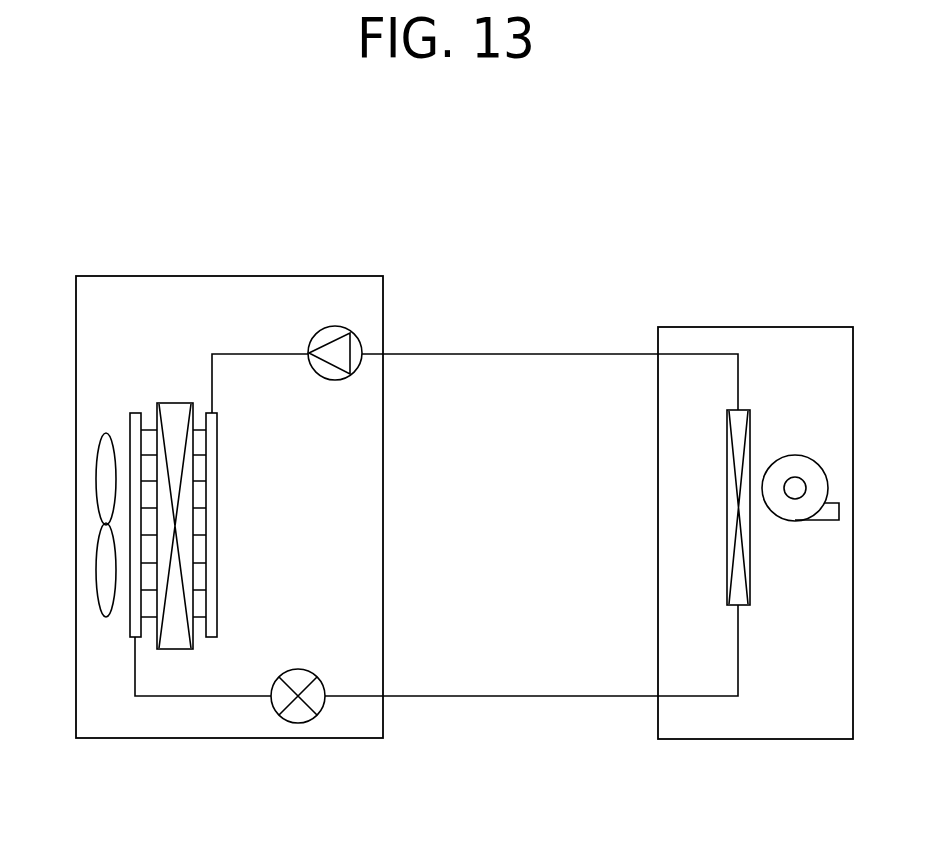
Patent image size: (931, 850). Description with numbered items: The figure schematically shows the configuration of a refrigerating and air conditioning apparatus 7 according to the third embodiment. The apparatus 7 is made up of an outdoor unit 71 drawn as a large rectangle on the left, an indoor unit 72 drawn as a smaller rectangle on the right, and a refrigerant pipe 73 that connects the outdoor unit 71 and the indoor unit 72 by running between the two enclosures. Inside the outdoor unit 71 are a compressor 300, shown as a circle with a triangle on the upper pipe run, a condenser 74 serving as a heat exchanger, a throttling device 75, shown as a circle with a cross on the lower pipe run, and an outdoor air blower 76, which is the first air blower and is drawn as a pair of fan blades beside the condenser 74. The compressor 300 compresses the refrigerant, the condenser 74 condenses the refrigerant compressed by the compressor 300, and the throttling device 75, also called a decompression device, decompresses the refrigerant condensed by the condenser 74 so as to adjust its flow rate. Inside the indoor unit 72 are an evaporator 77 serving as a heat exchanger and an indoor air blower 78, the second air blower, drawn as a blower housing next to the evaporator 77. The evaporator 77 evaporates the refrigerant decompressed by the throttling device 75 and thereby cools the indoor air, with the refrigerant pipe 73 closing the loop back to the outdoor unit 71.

The refrigerating and air conditioning apparatus 7 is at (99, 205).
The outdoor unit 71 is at (203, 738).
The indoor unit 72 is at (738, 739).
The refrigerant pipe 73 is at (520, 697).
The condenser 74 is at (175, 402).
The throttling device 75 is at (298, 723).
The outdoor air blower 76 is at (105, 620).
The evaporator 77 is at (727, 582).
The indoor air blower 78 is at (800, 522).
The compressor 300 is at (333, 380).